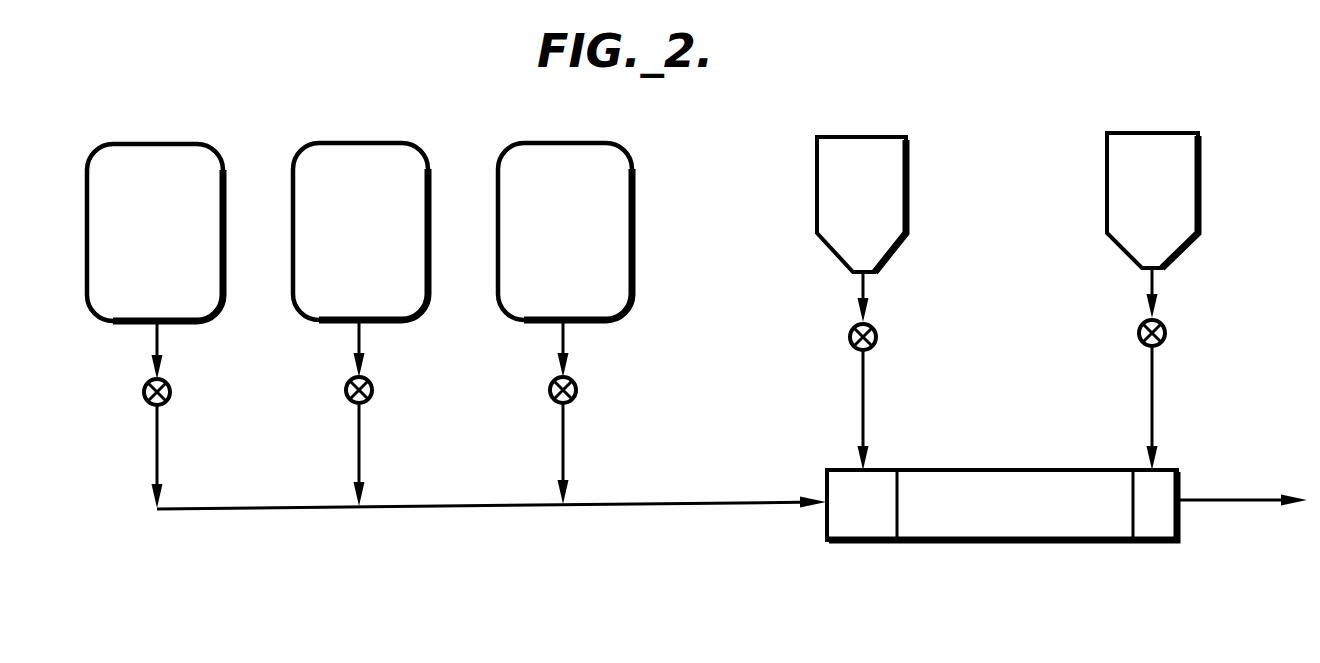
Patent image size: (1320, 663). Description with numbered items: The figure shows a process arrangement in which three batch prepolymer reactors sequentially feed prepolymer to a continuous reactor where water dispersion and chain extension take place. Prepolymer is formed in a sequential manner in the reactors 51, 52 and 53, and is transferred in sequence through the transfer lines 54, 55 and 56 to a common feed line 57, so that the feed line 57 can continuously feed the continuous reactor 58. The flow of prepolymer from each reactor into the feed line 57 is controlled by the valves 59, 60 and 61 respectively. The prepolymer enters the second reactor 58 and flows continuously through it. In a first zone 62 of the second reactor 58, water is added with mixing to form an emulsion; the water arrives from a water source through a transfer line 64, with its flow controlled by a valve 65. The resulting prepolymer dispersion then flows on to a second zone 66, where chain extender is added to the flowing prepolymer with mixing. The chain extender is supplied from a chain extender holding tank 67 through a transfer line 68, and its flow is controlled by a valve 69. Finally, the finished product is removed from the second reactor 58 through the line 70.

The batch prepolymer reactor 51 is at (193, 143).
The batch prepolymer reactor 52 is at (402, 142).
The batch prepolymer reactor 53 is at (605, 142).
The transfer line 54 is at (160, 352).
The transfer line 55 is at (362, 356).
The transfer line 56 is at (565, 356).
The feed line 57 is at (266, 511).
The continuous reactor 58 is at (1023, 488).
The valve 59 is at (167, 382).
The valve 60 is at (369, 385).
The valve 61 is at (573, 385).
The first zone 62 is at (883, 470).
The transfer line 64 is at (866, 300).
The valve 65 is at (873, 331).
The second zone 66 is at (1183, 470).
The chain extender holding tank 67 is at (1186, 133).
The transfer line 68 is at (1155, 298).
The valve 69 is at (1162, 327).
The product removal line 70 is at (1223, 500).